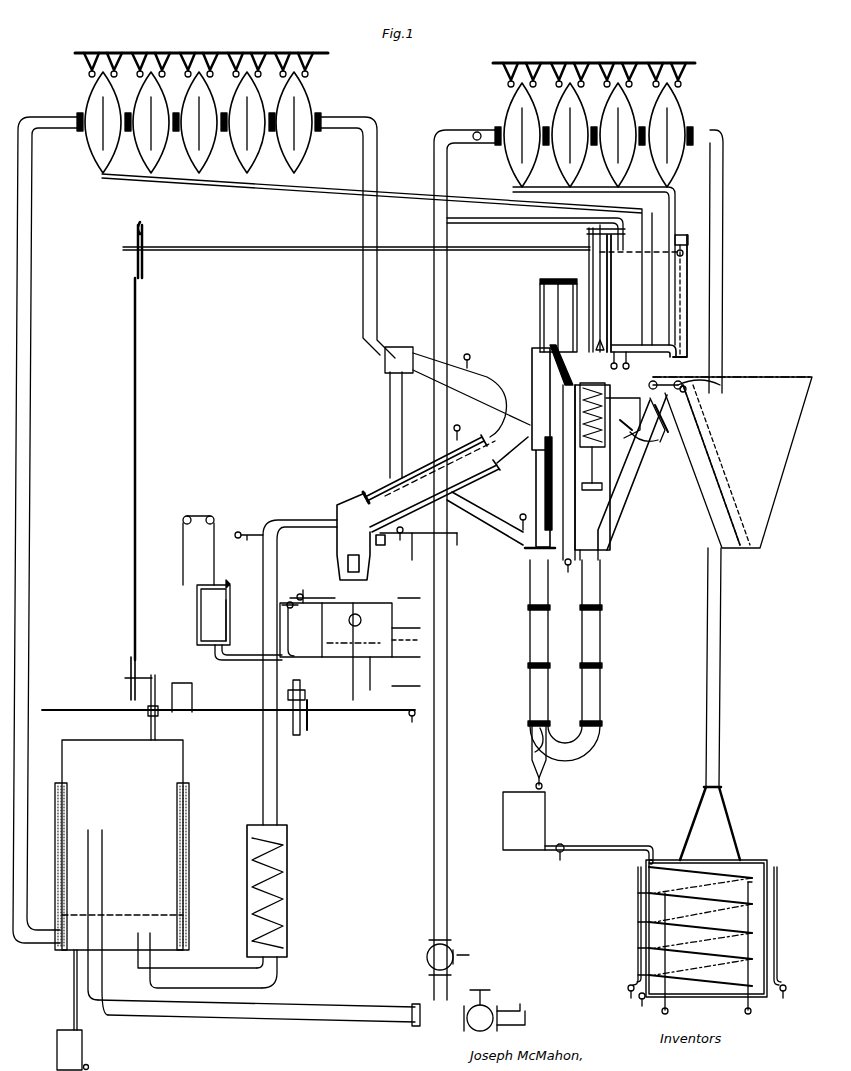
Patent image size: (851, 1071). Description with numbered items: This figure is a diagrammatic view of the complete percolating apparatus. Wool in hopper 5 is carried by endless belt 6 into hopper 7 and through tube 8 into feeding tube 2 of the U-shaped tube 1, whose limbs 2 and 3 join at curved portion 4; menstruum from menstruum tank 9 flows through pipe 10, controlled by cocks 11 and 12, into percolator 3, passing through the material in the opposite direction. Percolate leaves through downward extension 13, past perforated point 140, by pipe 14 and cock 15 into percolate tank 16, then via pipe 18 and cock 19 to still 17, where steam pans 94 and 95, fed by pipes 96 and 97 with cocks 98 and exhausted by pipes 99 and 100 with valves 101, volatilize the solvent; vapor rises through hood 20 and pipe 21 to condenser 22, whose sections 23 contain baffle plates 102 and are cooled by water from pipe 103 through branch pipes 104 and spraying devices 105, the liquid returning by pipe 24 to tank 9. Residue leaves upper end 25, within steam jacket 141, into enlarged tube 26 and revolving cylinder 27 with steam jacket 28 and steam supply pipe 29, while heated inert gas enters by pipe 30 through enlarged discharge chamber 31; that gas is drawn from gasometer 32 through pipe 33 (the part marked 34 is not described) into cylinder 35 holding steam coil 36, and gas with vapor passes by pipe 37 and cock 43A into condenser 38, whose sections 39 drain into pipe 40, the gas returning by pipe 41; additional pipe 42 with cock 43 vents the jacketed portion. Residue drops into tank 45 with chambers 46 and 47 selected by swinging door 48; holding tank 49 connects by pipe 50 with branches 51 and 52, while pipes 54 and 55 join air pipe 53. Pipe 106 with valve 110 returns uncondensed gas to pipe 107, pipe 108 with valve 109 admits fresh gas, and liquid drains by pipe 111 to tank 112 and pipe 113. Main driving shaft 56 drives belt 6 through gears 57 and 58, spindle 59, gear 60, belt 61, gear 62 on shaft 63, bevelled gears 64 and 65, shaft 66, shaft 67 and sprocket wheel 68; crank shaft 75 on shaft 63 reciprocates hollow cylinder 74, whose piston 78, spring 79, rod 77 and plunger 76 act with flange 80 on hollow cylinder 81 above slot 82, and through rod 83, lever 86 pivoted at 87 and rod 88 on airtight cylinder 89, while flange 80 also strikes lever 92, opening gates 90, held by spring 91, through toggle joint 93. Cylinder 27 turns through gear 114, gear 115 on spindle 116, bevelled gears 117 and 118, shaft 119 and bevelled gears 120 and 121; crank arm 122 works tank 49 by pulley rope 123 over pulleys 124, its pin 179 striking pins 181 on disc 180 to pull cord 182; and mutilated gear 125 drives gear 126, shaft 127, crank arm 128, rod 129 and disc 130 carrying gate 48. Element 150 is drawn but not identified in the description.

The U-shaped tube 1 is at (565, 665).
The feeding tube 2 is at (602, 626).
The percolator tube 3 is at (530, 600).
The lower curved portion 4 is at (586, 745).
The hopper 5 is at (770, 392).
The endless belt 6 is at (723, 500).
The hopper 7 is at (663, 424).
The tube 8 is at (625, 480).
The menstruum tank 9 is at (606, 276).
The pipe 10 is at (592, 562).
The cock 11 is at (604, 346).
The cock 12 is at (568, 573).
The downward extension 13 is at (532, 750).
The pipe 14 is at (536, 782).
The cock 15 is at (544, 786).
The percolate tank 16 is at (528, 822).
The still 17 is at (646, 908).
The pipe 18 is at (597, 846).
The cock 19 is at (558, 854).
The hood 20 is at (728, 815).
The pipe 21 is at (722, 660).
The condenser 22 is at (688, 119).
The condenser sections 23 is at (518, 106).
The pipe 24 is at (586, 190).
The upper end 25 is at (540, 430).
The enlarged tube 26 is at (478, 440).
The revolving cylinder 27 is at (393, 490).
The steam jacket 28 is at (425, 466).
The steam supply pipe 29 is at (457, 424).
The pipe 30 is at (290, 520).
The enlarged discharge chamber 31 is at (347, 503).
The gasometer 32 is at (168, 756).
The pipe 33 is at (145, 970).
The pipe bend 34 is at (280, 975).
The cylinder 35 is at (288, 870).
The steam coil 36 is at (252, 870).
The pipe 37 is at (378, 222).
The condenser 38 is at (316, 108).
The condenser sections 39 is at (252, 78).
The pipe 40 is at (190, 182).
The pipe 41 is at (32, 364).
The additional pipe 42 is at (485, 521).
The cock 43 is at (520, 515).
The cock 43A is at (472, 358).
The tank 45 is at (420, 628).
The discharge chamber 46 is at (420, 642).
The discharge chamber 47 is at (345, 665).
The swinging door 48 is at (350, 614).
The holding tank 49 is at (197, 606).
The pipe 50 is at (294, 650).
The branch pipe 51 is at (332, 597).
The branch pipe 52 is at (304, 588).
The pipe 53 is at (289, 598).
The branch pipe 54 is at (355, 642).
The branch pipe 55 is at (330, 642).
The main driving shaft 56 is at (84, 710).
The gear 57 is at (150, 716).
The gear 58 is at (156, 676).
The spindle 59 is at (144, 676).
The gear 60 is at (130, 665).
The belt 61 is at (138, 402).
The gear 62 is at (146, 240).
The shaft 63 is at (296, 252).
The bevelled gear 64 is at (690, 246).
The bevelled gear 65 is at (690, 255).
The shaft 66 is at (690, 300).
The shaft 67 is at (685, 384).
The sprocket wheel 68 is at (688, 389).
The hollow cylinder 74 is at (589, 401).
The crank shaft 75 is at (586, 290).
The plunger 76 is at (598, 490).
The rod 77 is at (612, 470).
The piston 78 is at (612, 430).
The spring 79 is at (576, 398).
The flange 80 is at (618, 368).
The hollow cylinder 81 is at (611, 542).
The slot 82 is at (600, 566).
The rod 83 is at (558, 318).
The lever 86 is at (556, 280).
The pivot 87 is at (556, 318).
The rod 88 is at (541, 300).
The airtight cylinder 89 is at (545, 352).
The gates 90 is at (642, 412).
The spring 91 is at (665, 374).
The lever 92 is at (626, 382).
The toggle joint 93 is at (644, 437).
The steam-heated pans 94 is at (710, 908).
The steam-heated pans 95 is at (752, 918).
The steam pipe 96 is at (637, 960).
The steam pipe 97 is at (778, 970).
The cock 98 is at (630, 994).
The steam exhaust pipe 99 is at (750, 990).
The steam exhaust pipe 100 is at (668, 984).
The valve 101 is at (662, 1010).
The baffle plates 102 is at (104, 135).
The cooling fluid pipe 103 is at (270, 53).
The branch pipes 104 is at (116, 60).
The spraying devices 105 is at (168, 68).
The pipe 106 is at (435, 296).
The pipe 107 is at (312, 1018).
The pipe 108 is at (508, 1010).
The valve 109 is at (481, 990).
The valve 110 is at (462, 950).
The pipe 111 is at (73, 993).
The tank 112 is at (58, 1050).
The pipe 113 is at (90, 1066).
The gear 114 is at (365, 492).
The gear 115 is at (380, 550).
The spindle 116 is at (410, 524).
The bevelled gear 117 is at (410, 533).
The bevelled gear 118 is at (414, 552).
The shaft 119 is at (420, 658).
The bevelled gear 120 is at (416, 718).
The bevelled gear 121 is at (416, 716).
The crank arm 122 is at (192, 696).
The pulley rope 123 is at (182, 552).
The pulleys 124 is at (211, 515).
The mutilated gear 125 is at (301, 700).
The gear 126 is at (288, 695).
The shaft 127 is at (372, 686).
The crank arm 128 is at (350, 700).
The rod 129 is at (420, 688).
The disc 130 is at (420, 598).
The perforated point 140 is at (535, 740).
The steam jacket 141 is at (536, 480).
The cam 150 is at (307, 732).
The projecting pin 179 is at (228, 576).
The disc 180 is at (238, 531).
The pins 181 is at (228, 554).
The cord 182 is at (458, 570).